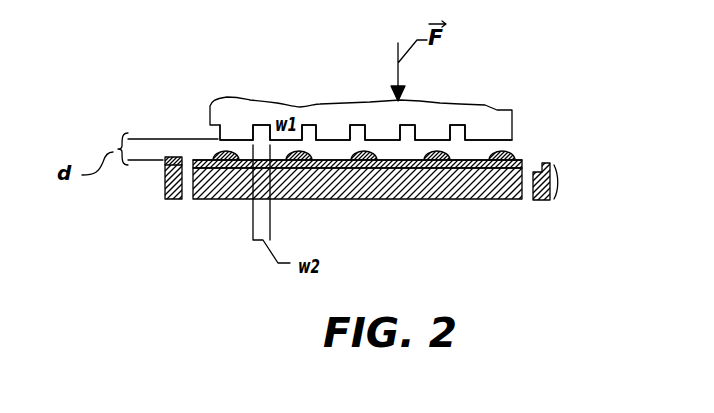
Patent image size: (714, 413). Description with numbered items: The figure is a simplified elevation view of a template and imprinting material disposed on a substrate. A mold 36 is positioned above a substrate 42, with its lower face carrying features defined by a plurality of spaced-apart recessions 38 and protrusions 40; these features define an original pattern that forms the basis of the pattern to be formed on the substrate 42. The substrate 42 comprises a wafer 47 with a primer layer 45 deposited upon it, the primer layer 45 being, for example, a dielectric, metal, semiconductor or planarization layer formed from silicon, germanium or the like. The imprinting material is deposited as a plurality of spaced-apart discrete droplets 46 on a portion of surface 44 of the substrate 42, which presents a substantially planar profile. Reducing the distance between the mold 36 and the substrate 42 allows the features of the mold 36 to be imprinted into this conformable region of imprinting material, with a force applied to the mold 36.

The mold 36 is at (503, 113).
The recessions 38 is at (313, 127).
The protrusions 40 is at (383, 140).
The substrate 42 is at (366, 140).
The surface 44 is at (469, 160).
The primer layer 45 is at (522, 162).
The droplets 46 is at (437, 150).
The wafer 47 is at (472, 185).